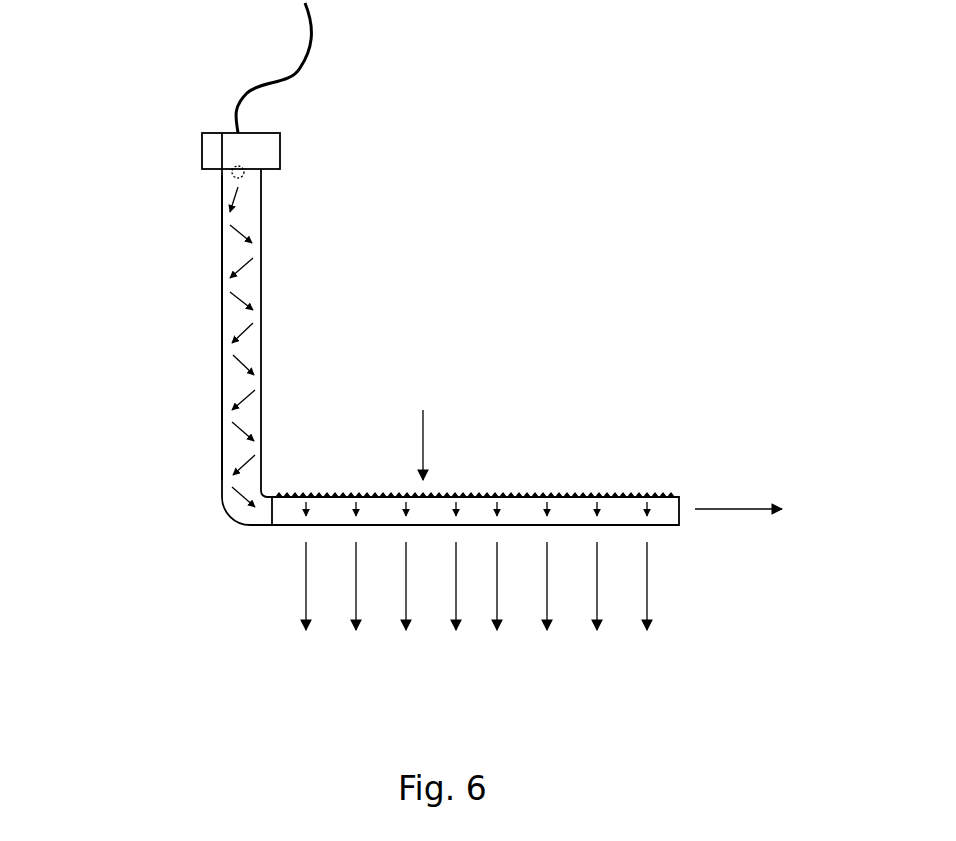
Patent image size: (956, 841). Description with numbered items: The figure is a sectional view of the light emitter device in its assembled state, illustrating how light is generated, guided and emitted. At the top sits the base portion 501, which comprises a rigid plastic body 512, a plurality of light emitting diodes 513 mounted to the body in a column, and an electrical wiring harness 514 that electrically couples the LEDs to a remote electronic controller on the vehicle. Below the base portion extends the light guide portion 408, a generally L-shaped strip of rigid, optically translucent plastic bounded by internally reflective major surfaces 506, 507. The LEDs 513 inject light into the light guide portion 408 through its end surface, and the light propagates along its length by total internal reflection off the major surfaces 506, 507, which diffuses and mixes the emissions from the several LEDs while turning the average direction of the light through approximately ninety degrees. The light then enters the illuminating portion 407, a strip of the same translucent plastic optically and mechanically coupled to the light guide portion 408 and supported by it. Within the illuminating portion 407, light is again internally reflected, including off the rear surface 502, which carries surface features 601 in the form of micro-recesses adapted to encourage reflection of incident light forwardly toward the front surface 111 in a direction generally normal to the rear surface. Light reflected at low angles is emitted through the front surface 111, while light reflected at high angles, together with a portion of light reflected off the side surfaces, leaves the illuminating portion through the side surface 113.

The front surface 111 is at (521, 534).
The side surface 113 is at (680, 503).
The illuminating portion 407 is at (545, 516).
The light guide portion 408 is at (369, 329).
The base portion 501 is at (318, 93).
The rear surface 502 is at (423, 432).
The major surface 506 is at (261, 280).
The major surface 507 is at (222, 280).
The body 512 is at (268, 154).
The light emitting diodes 513 is at (245, 173).
The electrical wiring harness 514 is at (317, 37).
The surface features 601 is at (498, 492).